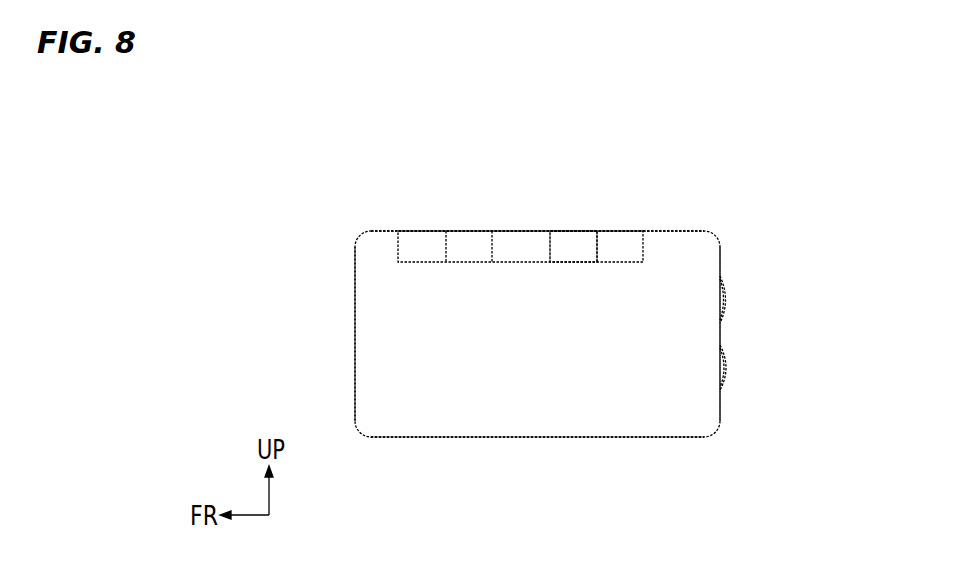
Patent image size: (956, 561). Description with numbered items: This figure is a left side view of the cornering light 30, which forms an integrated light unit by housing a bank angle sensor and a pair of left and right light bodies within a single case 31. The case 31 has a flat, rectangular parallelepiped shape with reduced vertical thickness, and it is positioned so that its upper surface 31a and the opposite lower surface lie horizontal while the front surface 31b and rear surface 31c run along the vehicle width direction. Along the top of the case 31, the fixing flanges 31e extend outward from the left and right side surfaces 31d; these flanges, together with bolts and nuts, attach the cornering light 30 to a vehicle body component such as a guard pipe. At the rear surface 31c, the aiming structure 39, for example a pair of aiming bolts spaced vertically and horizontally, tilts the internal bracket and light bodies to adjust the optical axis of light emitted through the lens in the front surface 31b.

The cornering light 30 is at (359, 232).
The case 31 is at (417, 229).
The upper surface 31a is at (687, 229).
The front surface 31b is at (352, 330).
The rear surface 31c is at (720, 262).
The side surfaces 31d is at (645, 418).
The fixing flanges 31e is at (564, 241).
The aiming structure 39 is at (728, 297).